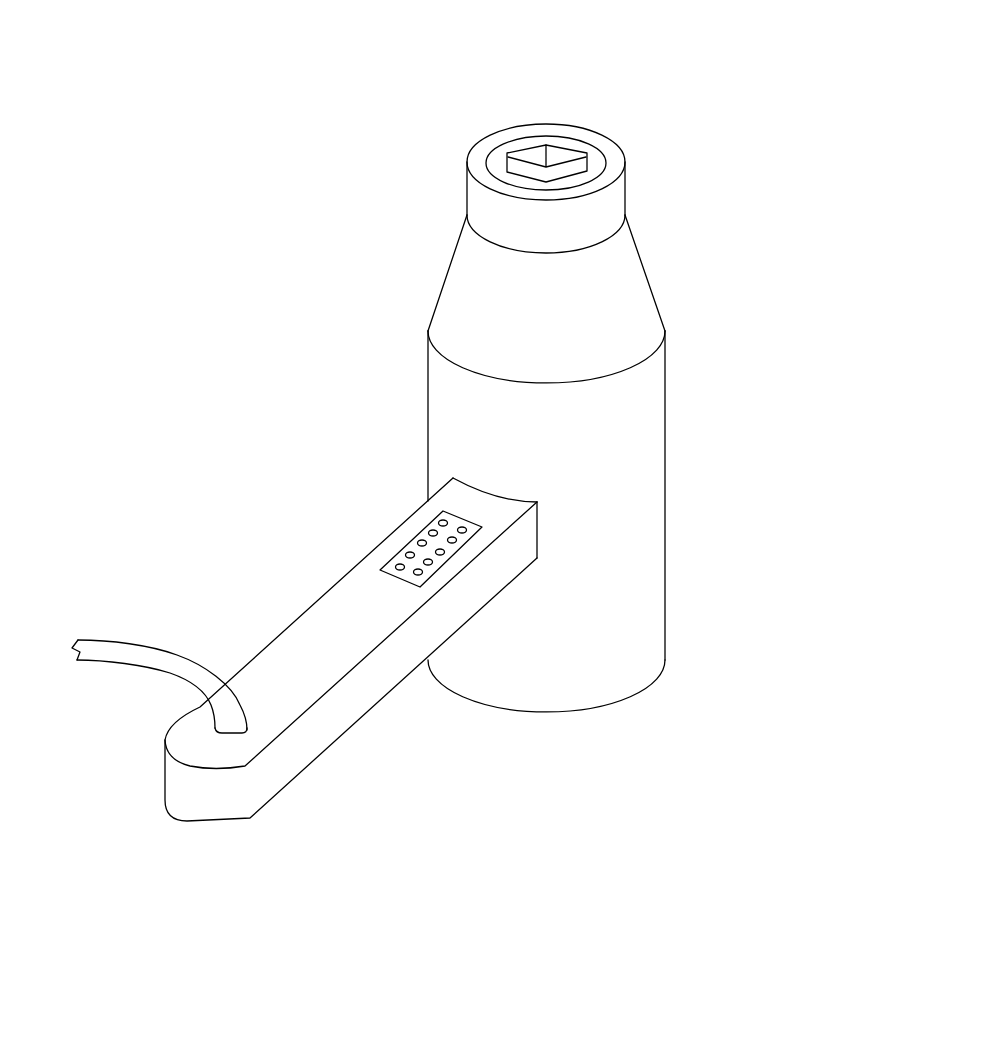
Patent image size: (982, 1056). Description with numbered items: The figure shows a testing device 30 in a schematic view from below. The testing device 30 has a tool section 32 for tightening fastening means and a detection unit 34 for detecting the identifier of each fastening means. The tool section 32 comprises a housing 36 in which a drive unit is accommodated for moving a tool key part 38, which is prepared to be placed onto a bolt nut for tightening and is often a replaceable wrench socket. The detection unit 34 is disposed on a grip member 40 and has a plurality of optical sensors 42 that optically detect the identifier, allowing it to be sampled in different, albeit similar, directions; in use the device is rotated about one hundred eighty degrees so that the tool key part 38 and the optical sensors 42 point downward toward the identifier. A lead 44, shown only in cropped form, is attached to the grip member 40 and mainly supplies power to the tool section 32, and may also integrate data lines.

The testing device 30 is at (306, 321).
The tool section 32 is at (724, 316).
The detection unit 34 is at (423, 530).
The housing 36 is at (642, 500).
The tool key part 38 is at (532, 142).
The grip member 40 is at (363, 706).
The optical sensors 42 is at (410, 554).
The lead 44 is at (102, 650).